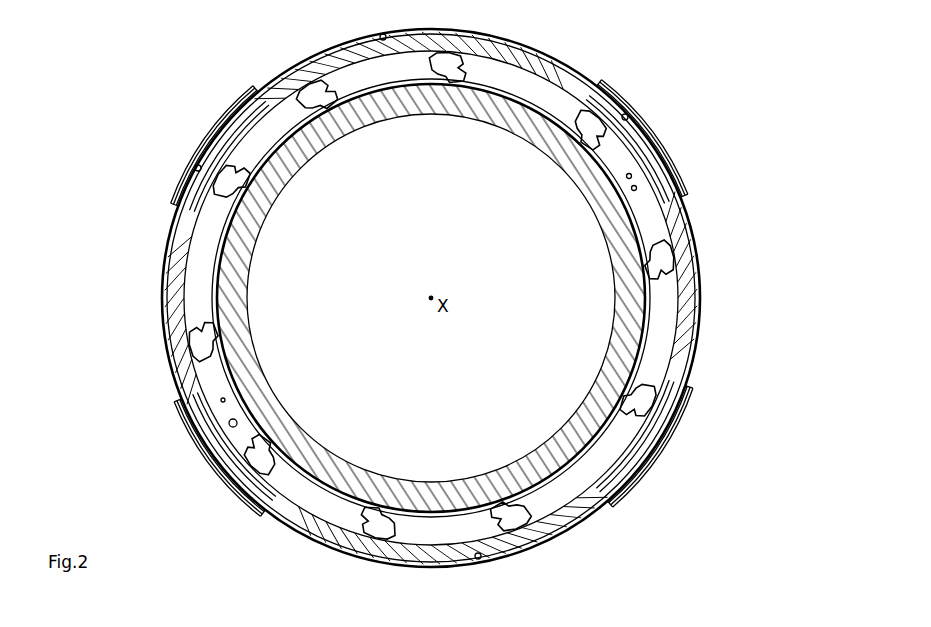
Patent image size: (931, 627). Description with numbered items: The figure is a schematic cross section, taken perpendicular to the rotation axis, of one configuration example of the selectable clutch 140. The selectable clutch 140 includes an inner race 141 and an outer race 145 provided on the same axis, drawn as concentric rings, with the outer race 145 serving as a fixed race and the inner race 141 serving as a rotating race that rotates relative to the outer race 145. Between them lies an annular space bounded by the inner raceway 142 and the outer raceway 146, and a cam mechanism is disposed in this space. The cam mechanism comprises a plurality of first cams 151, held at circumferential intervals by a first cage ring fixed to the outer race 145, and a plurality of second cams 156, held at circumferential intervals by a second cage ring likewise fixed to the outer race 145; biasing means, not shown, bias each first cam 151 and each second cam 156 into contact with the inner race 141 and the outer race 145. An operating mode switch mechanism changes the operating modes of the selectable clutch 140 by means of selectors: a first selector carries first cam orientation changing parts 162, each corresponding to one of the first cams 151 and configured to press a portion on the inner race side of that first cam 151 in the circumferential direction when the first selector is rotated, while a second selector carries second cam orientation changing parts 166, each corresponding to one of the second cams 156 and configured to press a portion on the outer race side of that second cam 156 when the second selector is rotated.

The selectable clutch 140 is at (212, 122).
The inner race 141 is at (250, 400).
The inner raceway 142 is at (195, 283).
The outer race 145 is at (184, 240).
The outer raceway 146 is at (188, 350).
The first cam 151 is at (688, 208).
The second cam 156 is at (675, 290).
The first cam orientation changing part 162 is at (642, 170).
The second cam orientation changing part 166 is at (700, 250).